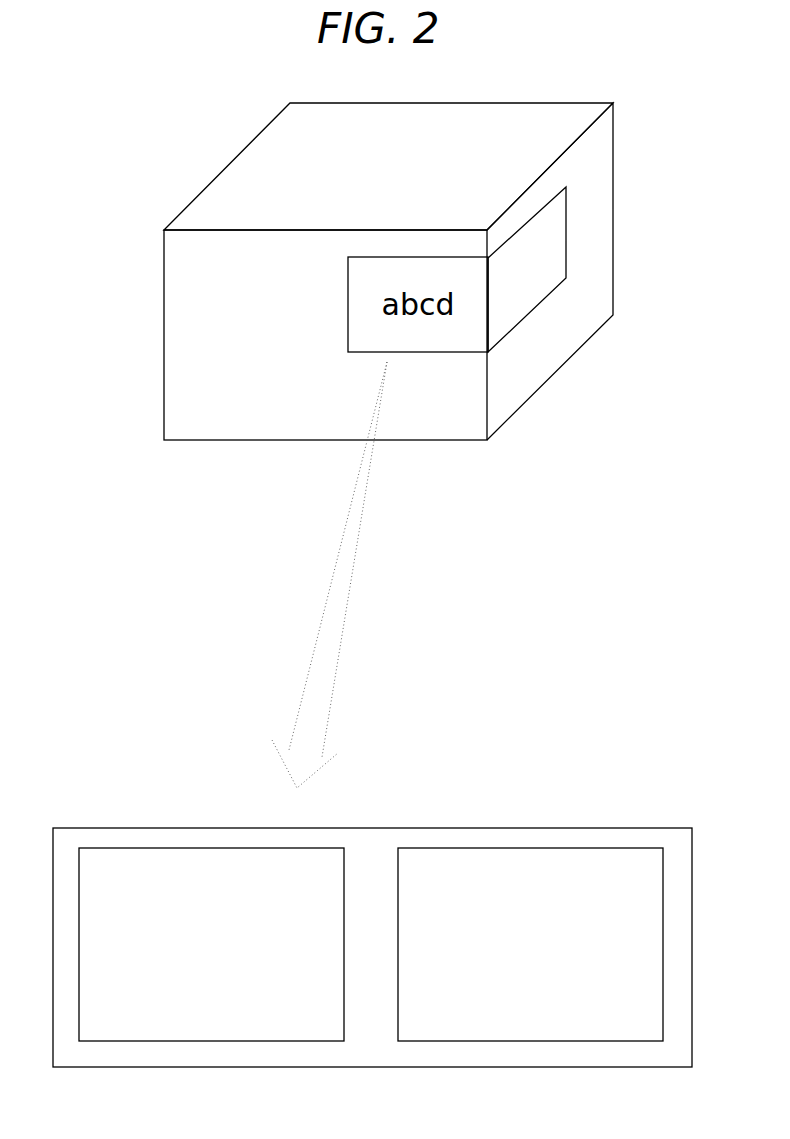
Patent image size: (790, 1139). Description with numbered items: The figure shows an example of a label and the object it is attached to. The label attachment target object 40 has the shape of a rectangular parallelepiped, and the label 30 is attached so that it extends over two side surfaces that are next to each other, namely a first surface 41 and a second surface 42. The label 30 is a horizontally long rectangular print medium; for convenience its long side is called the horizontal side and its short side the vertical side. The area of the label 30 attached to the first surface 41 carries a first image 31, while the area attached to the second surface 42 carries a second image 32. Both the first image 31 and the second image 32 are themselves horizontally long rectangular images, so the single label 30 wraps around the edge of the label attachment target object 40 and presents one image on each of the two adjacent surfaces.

The label 30 is at (565, 233).
The first image 31 is at (233, 1041).
The second image 32 is at (553, 1041).
The label attachment target object 40 is at (410, 263).
The first surface 41 is at (415, 433).
The second surface 42 is at (570, 348).